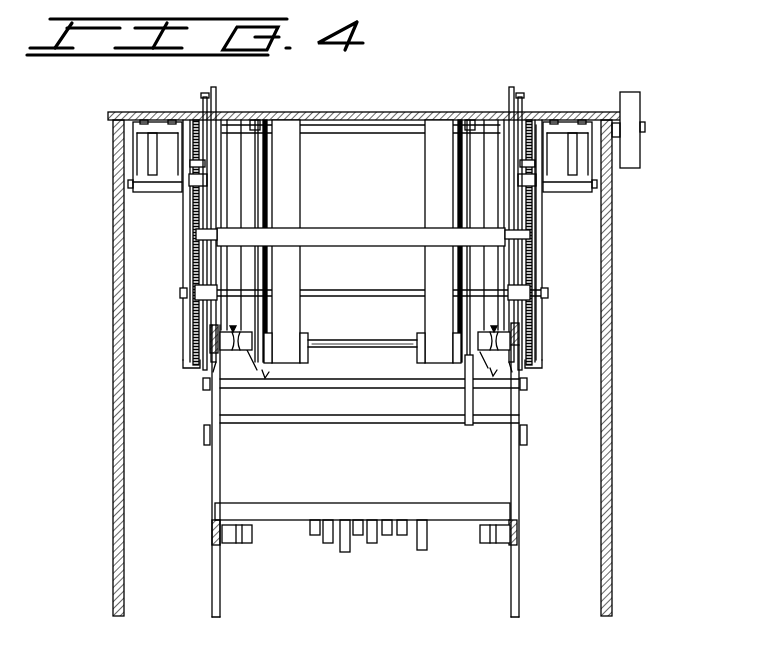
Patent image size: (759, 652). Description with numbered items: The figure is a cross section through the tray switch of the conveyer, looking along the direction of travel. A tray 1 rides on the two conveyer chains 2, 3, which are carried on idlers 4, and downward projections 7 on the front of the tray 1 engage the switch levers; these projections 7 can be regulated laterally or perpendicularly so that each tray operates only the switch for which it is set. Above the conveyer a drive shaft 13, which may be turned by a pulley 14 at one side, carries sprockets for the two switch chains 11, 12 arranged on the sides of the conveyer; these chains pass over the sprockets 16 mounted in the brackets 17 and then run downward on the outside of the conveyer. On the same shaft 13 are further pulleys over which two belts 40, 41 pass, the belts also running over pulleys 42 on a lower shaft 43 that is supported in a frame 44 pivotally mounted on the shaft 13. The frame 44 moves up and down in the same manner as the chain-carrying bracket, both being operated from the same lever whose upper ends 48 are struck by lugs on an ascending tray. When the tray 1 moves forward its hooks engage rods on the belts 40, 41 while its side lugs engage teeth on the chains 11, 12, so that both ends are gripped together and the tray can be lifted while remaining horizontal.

The tray 1 is at (386, 193).
The conveyer chain 2 is at (226, 330).
The conveyer chain 3 is at (498, 328).
The idler 4 is at (246, 545).
The projection 7 is at (372, 548).
The chain 11 is at (200, 268).
The chain 12 is at (530, 268).
The shaft 13 is at (360, 130).
The pulley 14 is at (633, 105).
The sprocket 16 is at (198, 195).
The bracket 17 is at (142, 155).
The belt 40 is at (287, 180).
The belt 41 is at (432, 168).
The pulley 42 is at (306, 340).
The shaft 43 is at (347, 368).
The frame 44 is at (257, 150).
The upper end of lever 48 is at (218, 96).